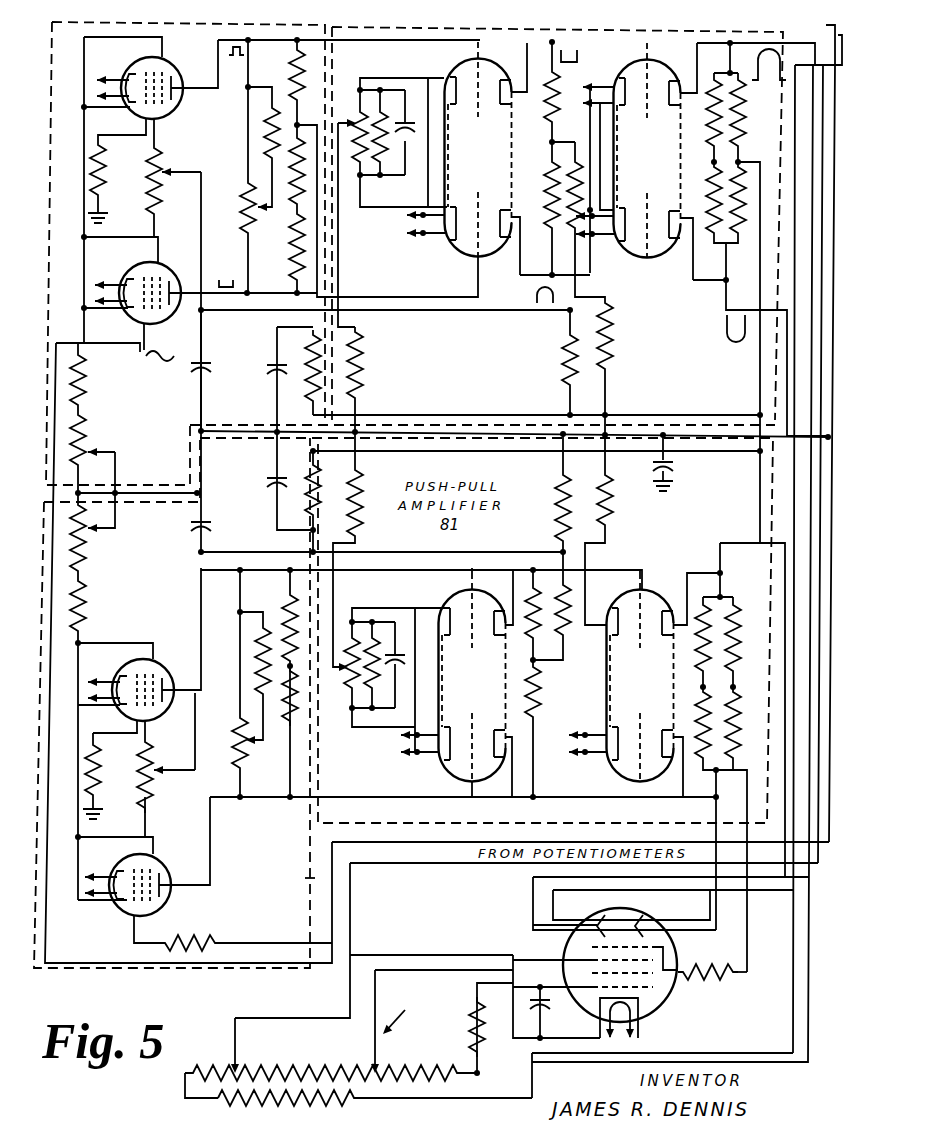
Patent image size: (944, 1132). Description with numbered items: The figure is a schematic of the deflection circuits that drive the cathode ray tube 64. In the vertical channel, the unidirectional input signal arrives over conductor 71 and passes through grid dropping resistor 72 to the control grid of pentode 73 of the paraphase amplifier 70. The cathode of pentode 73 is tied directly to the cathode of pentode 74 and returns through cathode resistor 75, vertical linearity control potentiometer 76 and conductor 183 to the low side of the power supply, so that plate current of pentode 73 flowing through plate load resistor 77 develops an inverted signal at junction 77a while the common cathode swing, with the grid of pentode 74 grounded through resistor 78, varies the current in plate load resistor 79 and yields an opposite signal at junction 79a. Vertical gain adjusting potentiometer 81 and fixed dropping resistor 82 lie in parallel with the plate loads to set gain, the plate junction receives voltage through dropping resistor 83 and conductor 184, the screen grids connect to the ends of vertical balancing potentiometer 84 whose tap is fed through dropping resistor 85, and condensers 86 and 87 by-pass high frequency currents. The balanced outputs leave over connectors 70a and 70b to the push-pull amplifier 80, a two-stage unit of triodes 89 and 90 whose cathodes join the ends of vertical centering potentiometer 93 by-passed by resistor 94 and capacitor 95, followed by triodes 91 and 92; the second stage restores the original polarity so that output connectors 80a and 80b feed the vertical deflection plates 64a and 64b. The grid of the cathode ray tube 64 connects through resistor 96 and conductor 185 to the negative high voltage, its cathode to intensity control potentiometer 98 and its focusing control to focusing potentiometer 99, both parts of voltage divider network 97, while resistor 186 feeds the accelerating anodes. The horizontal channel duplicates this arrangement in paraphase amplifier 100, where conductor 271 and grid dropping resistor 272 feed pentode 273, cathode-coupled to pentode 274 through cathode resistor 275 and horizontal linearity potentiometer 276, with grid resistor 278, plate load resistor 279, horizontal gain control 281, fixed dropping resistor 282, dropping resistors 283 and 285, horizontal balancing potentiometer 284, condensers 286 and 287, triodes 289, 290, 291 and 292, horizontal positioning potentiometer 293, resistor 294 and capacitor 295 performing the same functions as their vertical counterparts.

The paraphase amplifier 70 is at (95, 22).
The connector 70a is at (400, 40).
The connector 70b is at (368, 297).
The conductor 71 is at (403, 873).
The grid dropping resistor 72 is at (85, 375).
The pentode 73 is at (132, 270).
The pentode 74 is at (137, 66).
The cathode resistor 75 is at (85, 410).
The vertical linearity control potentiometer 76 is at (84, 450).
The plate load resistor 77 is at (294, 200).
The junction 77a is at (295, 290).
The resistor 78 is at (102, 167).
The plate load resistor 79 is at (298, 100).
The junction 79a is at (295, 44).
The push-pull amplifier 80 is at (486, 226).
The output connector 80a is at (725, 44).
The output connector 80b is at (724, 303).
The vertical gain adjusting potentiometer 81 is at (247, 208).
The fixed dropping resistor 82 is at (265, 115).
The dropping resistor 83 is at (312, 383).
The vertical balancing potentiometer 84 is at (157, 168).
The dropping resistor 85 is at (566, 338).
The condenser 86 is at (272, 368).
The condenser 87 is at (209, 370).
The triode 89 is at (467, 63).
The triode 90 is at (462, 260).
The triode 91 is at (637, 63).
The triode 92 is at (632, 259).
The vertical centering potentiometer 93 is at (342, 120).
The resistor 94 is at (384, 108).
The capacitor 95 is at (400, 180).
The resistor 96 is at (475, 1026).
The voltage divider network 97 is at (403, 1016).
The intensity control potentiometer 98 is at (377, 1070).
The focusing potentiometer 99 is at (240, 1065).
The paraphase amplifier 100 is at (60, 976).
The conductor 183 is at (676, 433).
The conductor 184 is at (640, 425).
The conductor 185 is at (757, 1062).
The resistor 186 is at (720, 980).
The conductor 271 is at (294, 877).
The grid dropping resistor 272 is at (178, 940).
The pentode 273 is at (162, 867).
The pentode 274 is at (165, 660).
The cathode resistor 275 is at (84, 618).
The horizontal linearity potentiometer 276 is at (86, 552).
The resistor 278 is at (100, 770).
The plate load resistor 279 is at (290, 590).
The horizontal gain control 281 is at (230, 750).
The fixed dropping resistor 282 is at (286, 617).
The dropping resistor 283 is at (295, 520).
The horizontal balancing potentiometer 284 is at (150, 766).
The dropping resistor 285 is at (560, 480).
The condenser 286 is at (272, 478).
The condenser 287 is at (204, 530).
The triode 289 is at (487, 592).
The triode 290 is at (444, 772).
The triode 291 is at (657, 592).
The triode 292 is at (625, 779).
The horizontal positioning potentiometer 293 is at (339, 659).
The resistor 294 is at (384, 650).
The capacitor 295 is at (392, 735).
The cathode ray tube 64 is at (558, 944).
The vertical deflection plate 64a is at (604, 915).
The vertical deflection plate 64b is at (645, 915).